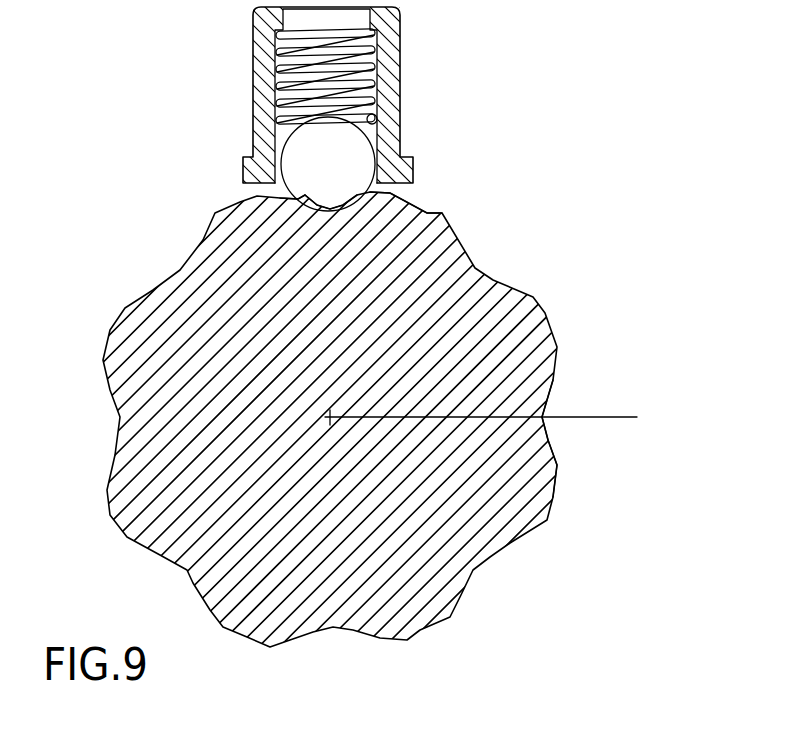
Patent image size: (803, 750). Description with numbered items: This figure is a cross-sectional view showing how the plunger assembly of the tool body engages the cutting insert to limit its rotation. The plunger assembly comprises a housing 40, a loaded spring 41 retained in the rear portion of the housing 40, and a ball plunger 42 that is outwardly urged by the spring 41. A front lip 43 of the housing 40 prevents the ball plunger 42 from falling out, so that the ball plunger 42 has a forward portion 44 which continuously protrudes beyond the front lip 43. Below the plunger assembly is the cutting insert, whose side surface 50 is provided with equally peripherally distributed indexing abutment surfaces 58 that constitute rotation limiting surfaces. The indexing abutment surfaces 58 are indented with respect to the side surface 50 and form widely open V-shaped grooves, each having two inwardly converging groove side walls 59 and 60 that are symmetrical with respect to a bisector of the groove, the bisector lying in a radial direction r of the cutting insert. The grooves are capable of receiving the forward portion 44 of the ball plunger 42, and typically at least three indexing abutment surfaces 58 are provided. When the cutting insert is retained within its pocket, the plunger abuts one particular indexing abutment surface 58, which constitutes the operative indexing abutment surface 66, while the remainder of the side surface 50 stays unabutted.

The housing 40 is at (400, 32).
The loaded spring 41 is at (400, 75).
The ball plunger 42 is at (350, 150).
The front lip 43 is at (367, 148).
The forward portion 44 is at (330, 203).
The side surface 50 is at (585, 306).
The indexing abutment surfaces 58 is at (535, 248).
The groove side wall 59 is at (425, 215).
The groove side wall 60 is at (290, 204).
The operative indexing abutment surface 66 is at (255, 191).
The radial direction r is at (612, 417).